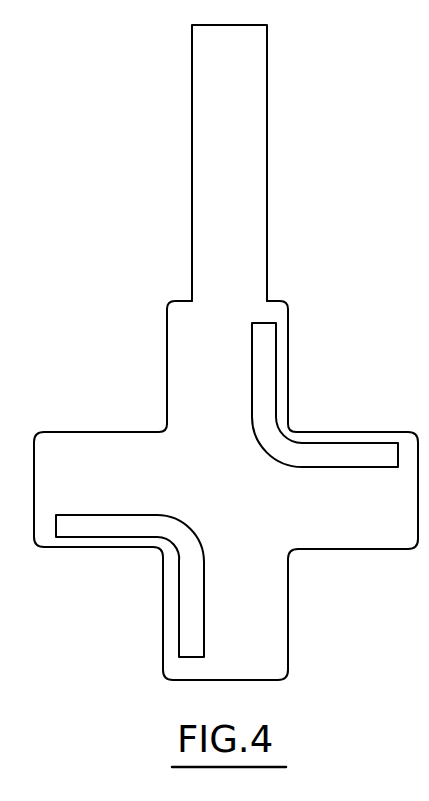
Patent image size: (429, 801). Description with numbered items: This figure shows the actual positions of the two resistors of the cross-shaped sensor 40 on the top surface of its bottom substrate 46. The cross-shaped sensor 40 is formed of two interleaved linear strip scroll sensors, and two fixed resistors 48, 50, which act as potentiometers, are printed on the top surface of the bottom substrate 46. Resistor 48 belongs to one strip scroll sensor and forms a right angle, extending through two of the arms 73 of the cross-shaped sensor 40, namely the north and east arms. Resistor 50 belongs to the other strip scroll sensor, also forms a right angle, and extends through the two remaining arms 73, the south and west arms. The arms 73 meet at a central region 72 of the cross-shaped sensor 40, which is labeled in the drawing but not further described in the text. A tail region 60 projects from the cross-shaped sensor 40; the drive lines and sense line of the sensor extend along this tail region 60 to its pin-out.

The cross-shaped sensor 40 is at (305, 204).
The tail region 60 is at (256, 70).
The bottom substrate 46 is at (184, 385).
The resistor 48 is at (352, 449).
The resistor 50 is at (75, 527).
The central body region 72 is at (243, 516).
The arms 73 is at (221, 346).